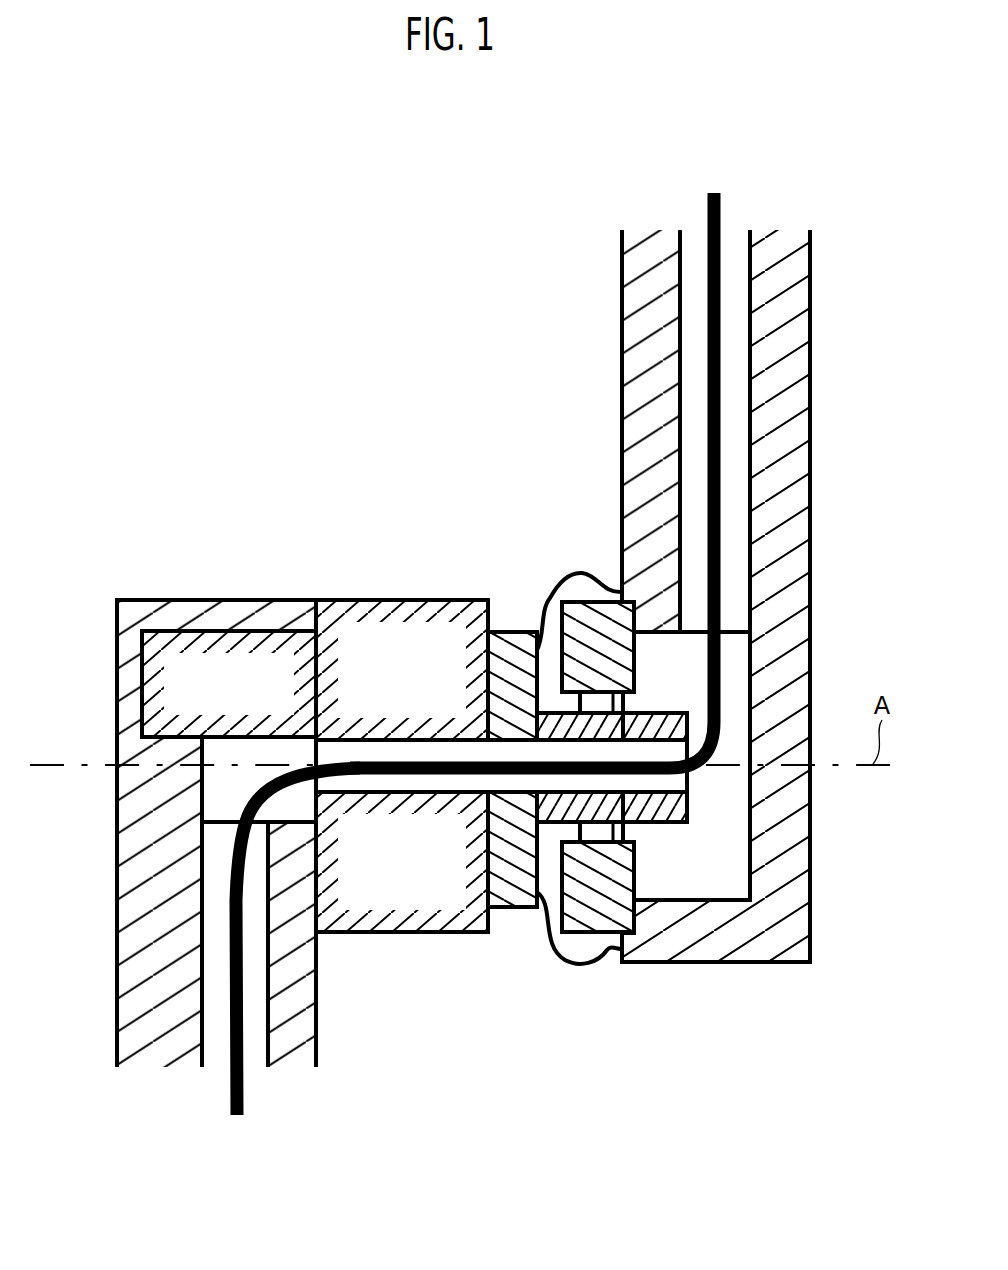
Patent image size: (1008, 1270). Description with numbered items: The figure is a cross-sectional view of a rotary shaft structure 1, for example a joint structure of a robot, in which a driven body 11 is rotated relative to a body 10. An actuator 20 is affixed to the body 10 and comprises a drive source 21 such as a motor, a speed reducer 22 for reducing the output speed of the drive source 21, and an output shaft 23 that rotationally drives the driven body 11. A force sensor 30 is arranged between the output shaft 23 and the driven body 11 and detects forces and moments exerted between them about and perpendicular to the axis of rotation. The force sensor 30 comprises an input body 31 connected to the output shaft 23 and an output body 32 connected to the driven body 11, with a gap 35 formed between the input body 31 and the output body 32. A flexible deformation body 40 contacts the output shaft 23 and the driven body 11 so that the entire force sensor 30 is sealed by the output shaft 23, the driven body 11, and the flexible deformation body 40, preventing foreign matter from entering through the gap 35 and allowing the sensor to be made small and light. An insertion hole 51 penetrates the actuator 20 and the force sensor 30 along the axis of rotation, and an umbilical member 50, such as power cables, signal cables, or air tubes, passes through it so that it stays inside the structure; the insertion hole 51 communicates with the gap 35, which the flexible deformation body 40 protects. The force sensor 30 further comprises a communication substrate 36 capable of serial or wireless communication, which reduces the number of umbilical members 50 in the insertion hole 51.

The rotary shaft structure 1 is at (495, 654).
The body 10 is at (117, 890).
The driven body 11 is at (810, 464).
The actuator 20 is at (418, 722).
The drive source 21 is at (244, 672).
The speed reducer 22 is at (426, 650).
The output shaft 23 is at (513, 650).
The force sensor 30 is at (637, 767).
The input body 31 is at (548, 813).
The output body 32 is at (592, 913).
The gap 35 is at (596, 705).
The communication substrate 36 is at (652, 813).
The flexible deformation body 40 is at (588, 571).
The umbilical member 50 is at (711, 351).
The insertion hole 51 is at (420, 782).